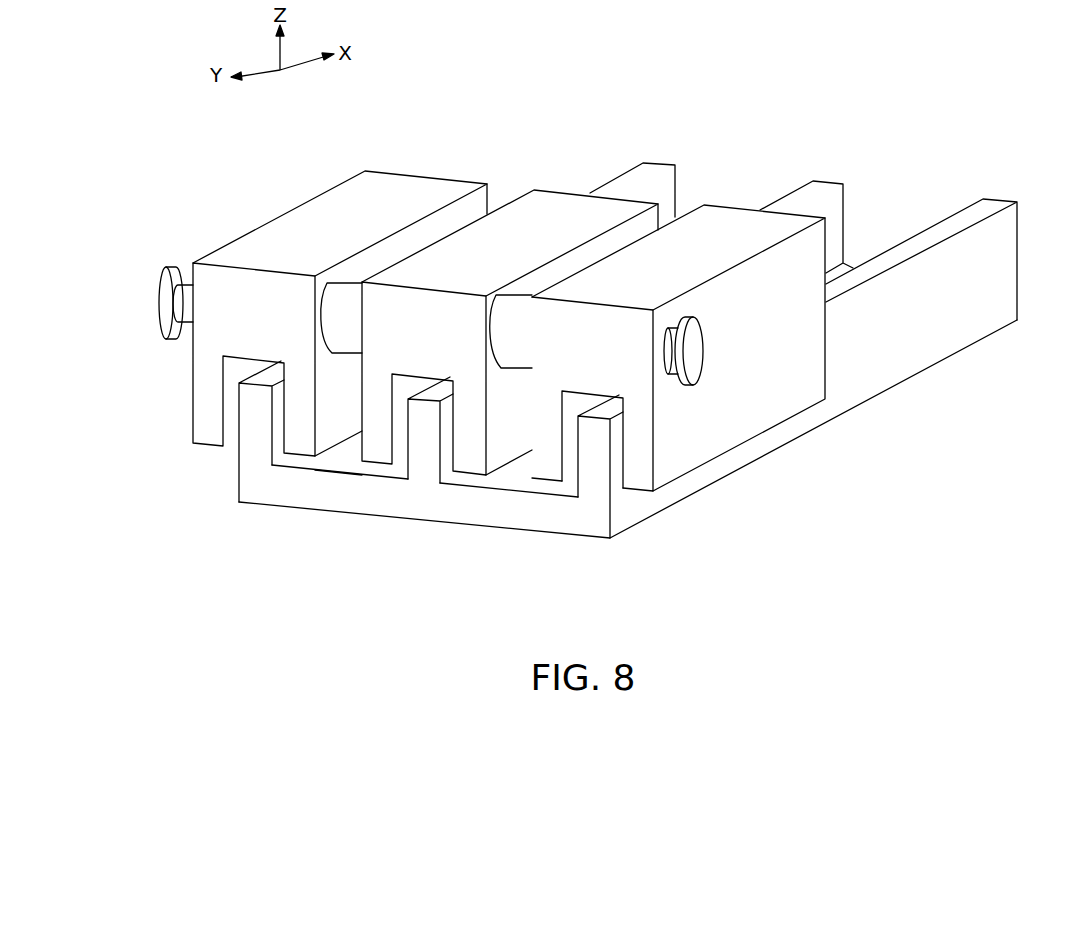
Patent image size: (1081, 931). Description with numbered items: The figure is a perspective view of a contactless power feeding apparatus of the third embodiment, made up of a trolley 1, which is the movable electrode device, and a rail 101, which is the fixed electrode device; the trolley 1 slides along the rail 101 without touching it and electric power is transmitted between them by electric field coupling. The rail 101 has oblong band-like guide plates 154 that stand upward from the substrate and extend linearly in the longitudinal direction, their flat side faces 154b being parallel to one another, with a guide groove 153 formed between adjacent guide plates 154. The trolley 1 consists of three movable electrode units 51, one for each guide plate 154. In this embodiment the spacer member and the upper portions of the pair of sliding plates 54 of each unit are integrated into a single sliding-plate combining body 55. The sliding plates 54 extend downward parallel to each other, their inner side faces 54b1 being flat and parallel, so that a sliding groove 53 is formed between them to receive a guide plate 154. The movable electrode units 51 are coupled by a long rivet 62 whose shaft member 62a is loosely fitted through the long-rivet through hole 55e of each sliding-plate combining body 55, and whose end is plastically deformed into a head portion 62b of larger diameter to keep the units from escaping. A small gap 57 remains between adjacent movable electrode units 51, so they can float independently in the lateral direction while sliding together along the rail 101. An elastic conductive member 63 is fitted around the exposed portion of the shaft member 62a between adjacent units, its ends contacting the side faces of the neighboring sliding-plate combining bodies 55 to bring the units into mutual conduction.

The trolley 1 is at (449, 137).
The movable electrode unit 51 is at (397, 174).
The small gap 57 is at (503, 205).
The sliding-plate combining body 55 is at (620, 335).
The sliding groove 53 is at (568, 412).
The sliding plate 54 is at (712, 428).
The inner side face 54b1 is at (235, 427).
The side face 154b is at (447, 445).
The long-rivet through hole 55e is at (670, 374).
The guide plate 154 is at (960, 212).
The guide groove 153 is at (343, 462).
The elastic conductive member 63 is at (340, 342).
The long rivet 62 is at (695, 353).
The shaft member 62a is at (177, 326).
The head portion 62b is at (158, 325).
The rail 101 is at (971, 381).